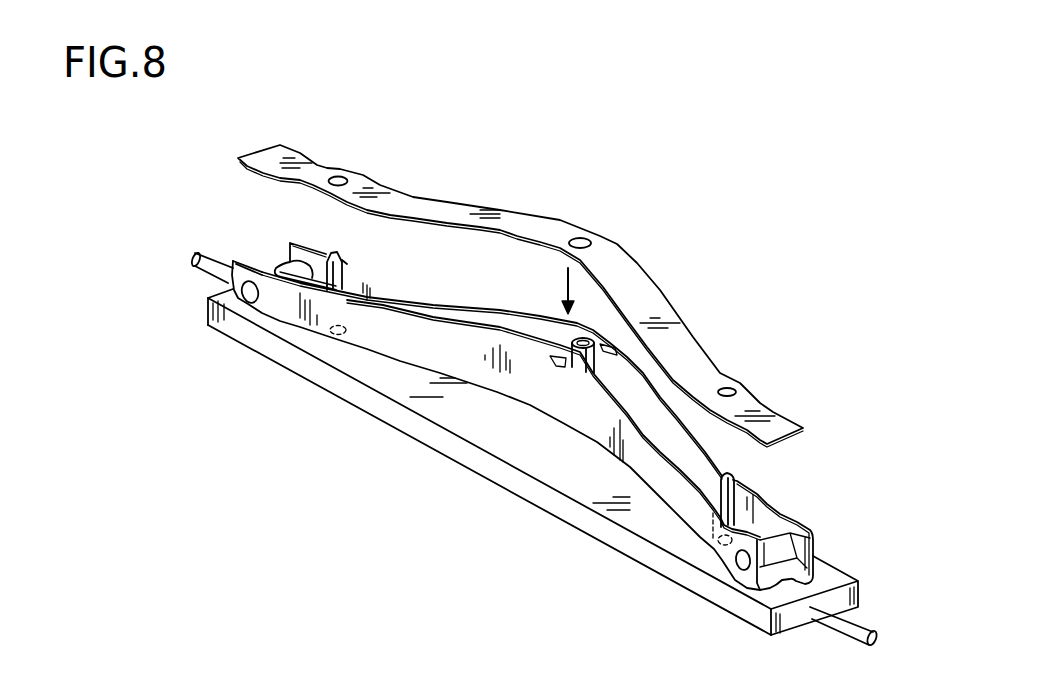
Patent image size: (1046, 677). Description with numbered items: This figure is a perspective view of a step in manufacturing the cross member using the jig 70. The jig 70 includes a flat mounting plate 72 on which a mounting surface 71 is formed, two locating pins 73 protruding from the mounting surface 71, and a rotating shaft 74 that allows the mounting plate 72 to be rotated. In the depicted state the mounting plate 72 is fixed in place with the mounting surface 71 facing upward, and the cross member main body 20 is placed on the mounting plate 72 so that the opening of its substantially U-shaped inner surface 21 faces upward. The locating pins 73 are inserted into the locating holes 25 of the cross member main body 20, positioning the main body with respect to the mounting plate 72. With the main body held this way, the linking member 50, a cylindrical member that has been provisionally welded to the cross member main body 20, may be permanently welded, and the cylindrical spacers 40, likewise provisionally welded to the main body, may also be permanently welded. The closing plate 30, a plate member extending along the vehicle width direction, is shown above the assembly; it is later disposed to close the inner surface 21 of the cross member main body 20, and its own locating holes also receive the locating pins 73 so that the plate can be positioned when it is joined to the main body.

The cross member main body 20 is at (576, 408).
The inner surface 21 is at (443, 310).
The locating holes 25 is at (330, 335).
The closing plate 30 is at (637, 272).
The cylindrical spacers 40 is at (284, 270).
The linking member 50 is at (572, 340).
The jig 70 is at (180, 189).
The mounting surface 71 is at (380, 375).
The mounting plate 72 is at (427, 433).
The locating pins 73 is at (342, 280).
The rotating shaft 74 is at (212, 262).